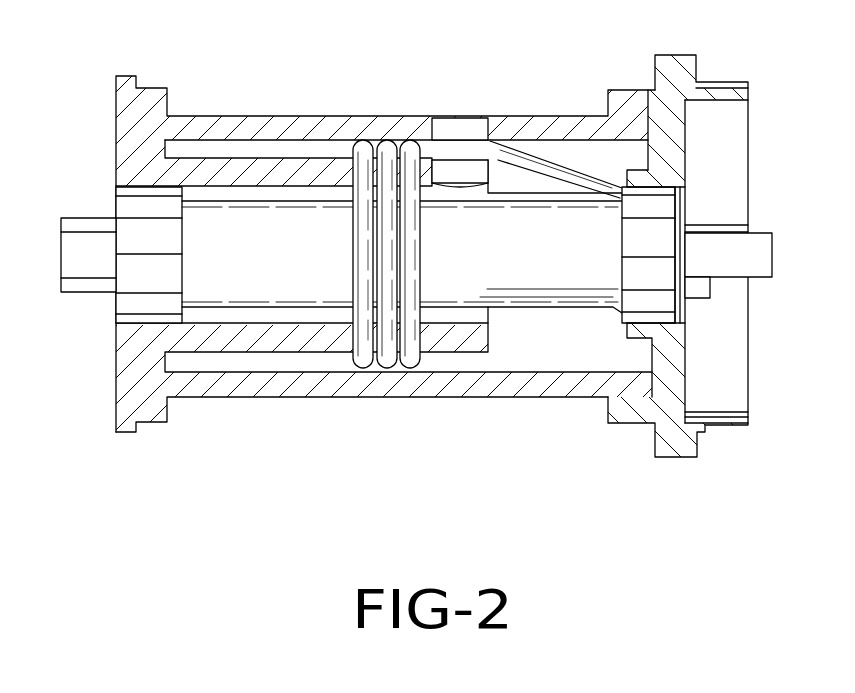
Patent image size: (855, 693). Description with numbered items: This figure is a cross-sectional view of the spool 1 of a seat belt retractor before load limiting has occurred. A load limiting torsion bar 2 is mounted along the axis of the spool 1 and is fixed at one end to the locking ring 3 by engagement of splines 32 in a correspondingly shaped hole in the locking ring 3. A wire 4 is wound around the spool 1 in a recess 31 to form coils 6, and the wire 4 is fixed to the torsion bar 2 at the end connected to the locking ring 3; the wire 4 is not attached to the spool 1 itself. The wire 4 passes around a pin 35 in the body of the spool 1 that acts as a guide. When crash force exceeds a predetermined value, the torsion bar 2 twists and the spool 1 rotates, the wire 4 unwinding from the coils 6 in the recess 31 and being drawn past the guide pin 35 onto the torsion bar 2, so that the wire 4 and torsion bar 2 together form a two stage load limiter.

The spool 1 is at (560, 385).
The load limiting torsion bar 2 is at (230, 290).
The locking ring 3 is at (675, 430).
The recess 31 is at (262, 360).
The splines 32 is at (632, 240).
The pin 35 is at (457, 132).
The wire 4 is at (358, 272).
The coils 6 is at (388, 358).